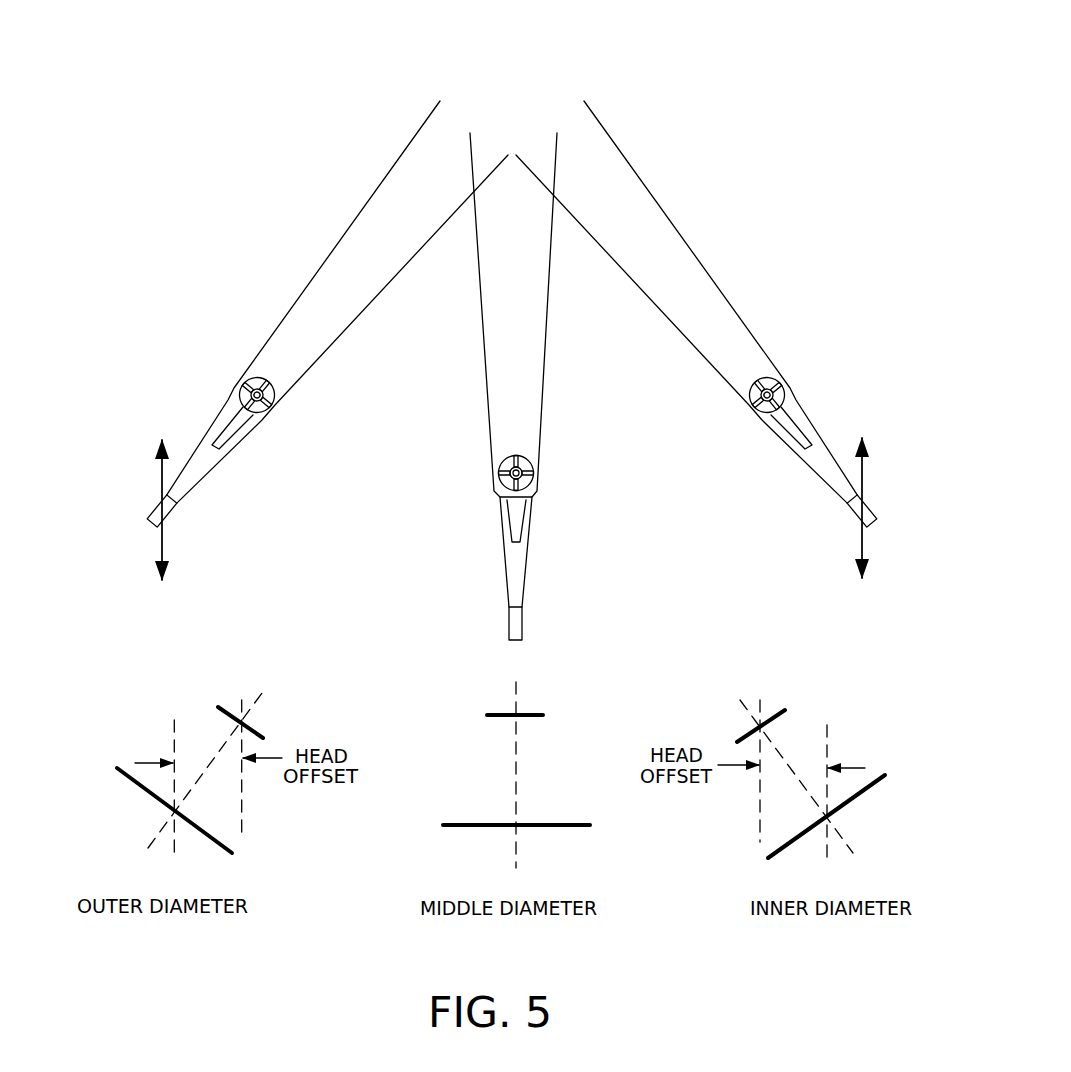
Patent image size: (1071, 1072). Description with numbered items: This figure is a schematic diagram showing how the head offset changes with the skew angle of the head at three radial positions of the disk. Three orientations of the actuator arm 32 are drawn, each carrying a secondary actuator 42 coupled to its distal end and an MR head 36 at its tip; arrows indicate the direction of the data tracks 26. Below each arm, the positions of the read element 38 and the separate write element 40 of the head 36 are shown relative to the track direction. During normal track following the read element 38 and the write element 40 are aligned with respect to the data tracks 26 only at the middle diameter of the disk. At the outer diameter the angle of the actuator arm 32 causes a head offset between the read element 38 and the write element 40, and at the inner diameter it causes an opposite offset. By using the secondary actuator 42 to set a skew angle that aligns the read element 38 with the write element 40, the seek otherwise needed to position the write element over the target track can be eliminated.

The data tracks 26 is at (160, 484).
The actuator arm 32 is at (320, 267).
The magnetoresistive head 36 is at (160, 515).
The read element 38 is at (233, 711).
The write element 40 is at (140, 791).
The secondary actuator 42 is at (270, 383).